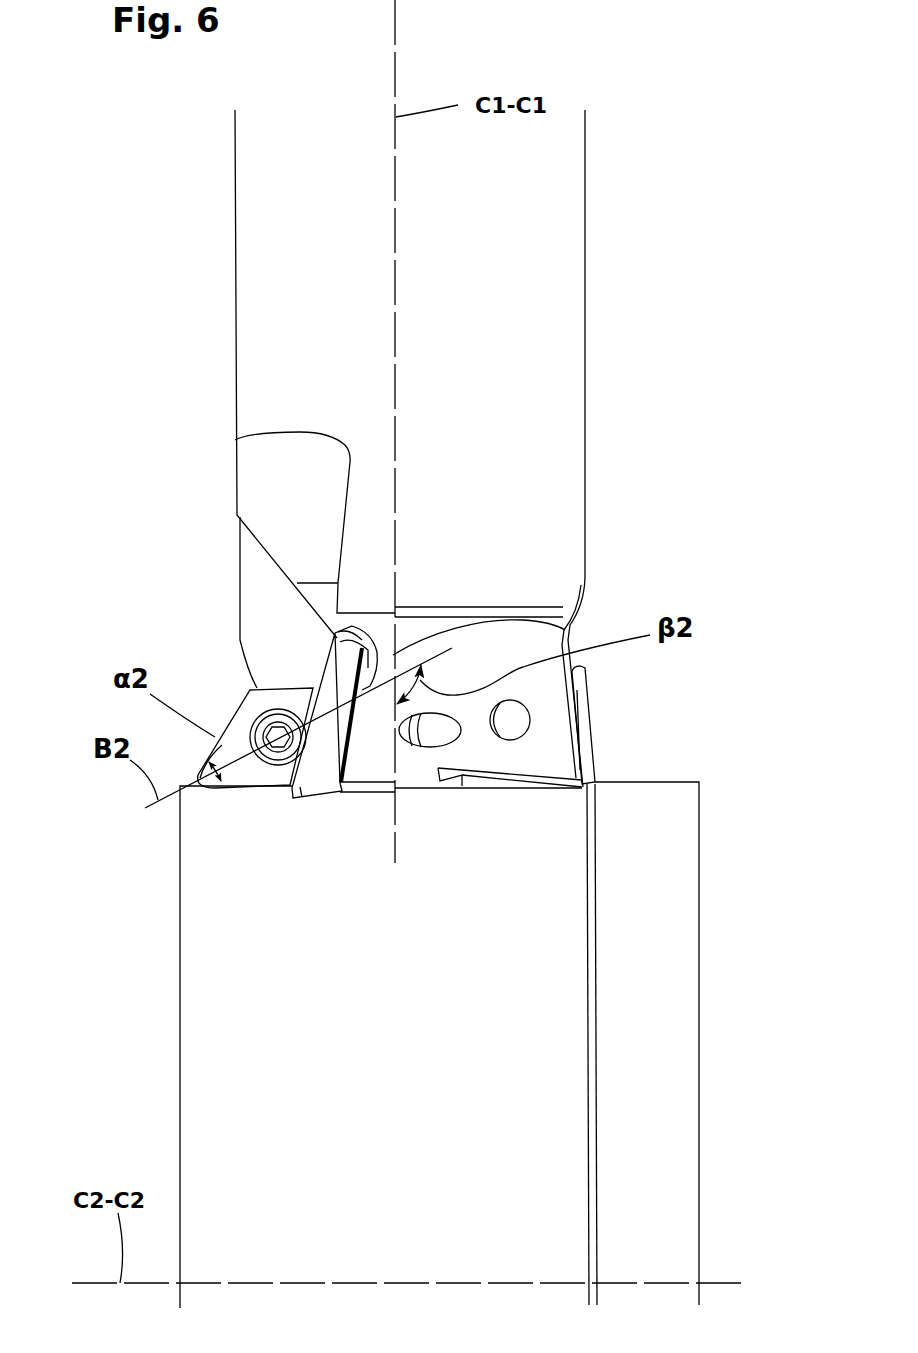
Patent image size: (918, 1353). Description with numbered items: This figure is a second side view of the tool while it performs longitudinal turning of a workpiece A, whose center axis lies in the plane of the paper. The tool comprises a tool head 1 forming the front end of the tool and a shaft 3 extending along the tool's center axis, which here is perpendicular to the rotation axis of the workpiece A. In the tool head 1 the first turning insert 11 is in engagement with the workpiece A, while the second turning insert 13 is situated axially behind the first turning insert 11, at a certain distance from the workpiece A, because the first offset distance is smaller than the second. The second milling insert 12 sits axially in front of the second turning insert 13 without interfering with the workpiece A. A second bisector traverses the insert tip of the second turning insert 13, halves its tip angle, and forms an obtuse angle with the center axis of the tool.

The tool head 1 is at (410, 812).
The shaft 3 is at (592, 325).
The first turning insert 11 is at (597, 732).
The second milling insert 12 is at (309, 812).
The second turning insert 13 is at (231, 710).
The workpiece A is at (176, 1040).